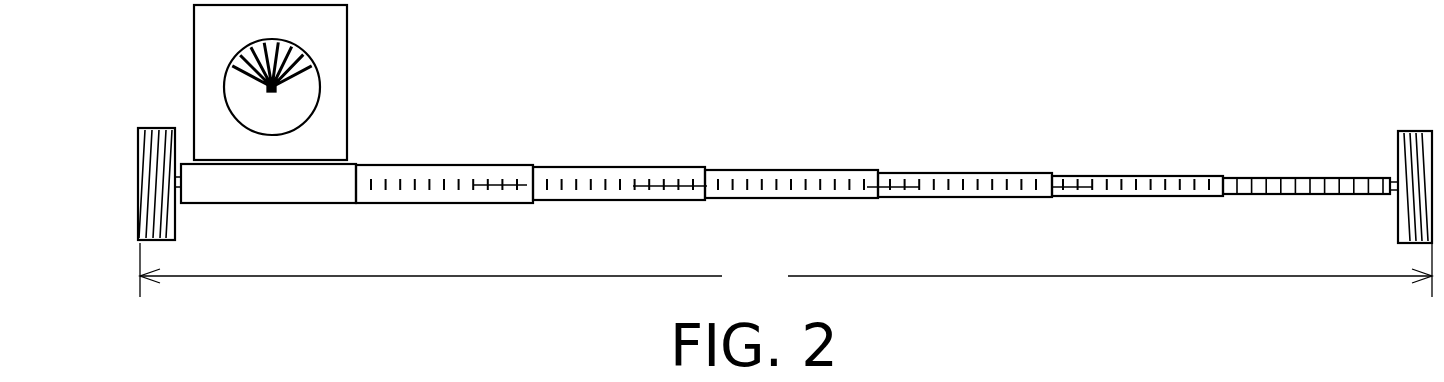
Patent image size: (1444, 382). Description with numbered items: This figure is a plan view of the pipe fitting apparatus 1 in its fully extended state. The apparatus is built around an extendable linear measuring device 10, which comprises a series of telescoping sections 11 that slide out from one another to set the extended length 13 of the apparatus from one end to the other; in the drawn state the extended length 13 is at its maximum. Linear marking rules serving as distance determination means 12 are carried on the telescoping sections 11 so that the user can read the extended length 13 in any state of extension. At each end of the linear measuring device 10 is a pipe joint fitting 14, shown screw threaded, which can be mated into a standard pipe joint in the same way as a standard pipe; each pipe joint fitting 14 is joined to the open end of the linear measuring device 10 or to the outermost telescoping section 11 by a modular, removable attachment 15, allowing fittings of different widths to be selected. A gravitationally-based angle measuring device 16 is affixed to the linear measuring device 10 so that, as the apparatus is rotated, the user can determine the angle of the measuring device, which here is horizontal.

The pipe fitting apparatus 1 is at (968, 75).
The linear measuring device 10 is at (284, 200).
The telescoping section 11 is at (1272, 183).
The distance determination means 12 is at (527, 185).
The extended length 13 is at (786, 270).
The pipe joint fitting 14 is at (166, 130).
The attachment 15 is at (178, 188).
The gravitationally-based angle measuring device 16 is at (240, 50).